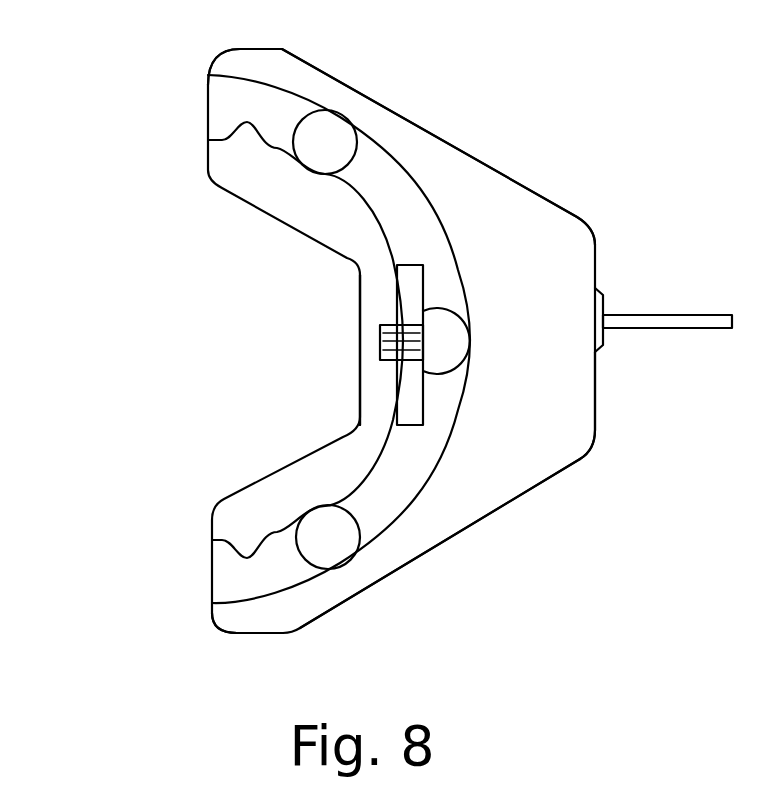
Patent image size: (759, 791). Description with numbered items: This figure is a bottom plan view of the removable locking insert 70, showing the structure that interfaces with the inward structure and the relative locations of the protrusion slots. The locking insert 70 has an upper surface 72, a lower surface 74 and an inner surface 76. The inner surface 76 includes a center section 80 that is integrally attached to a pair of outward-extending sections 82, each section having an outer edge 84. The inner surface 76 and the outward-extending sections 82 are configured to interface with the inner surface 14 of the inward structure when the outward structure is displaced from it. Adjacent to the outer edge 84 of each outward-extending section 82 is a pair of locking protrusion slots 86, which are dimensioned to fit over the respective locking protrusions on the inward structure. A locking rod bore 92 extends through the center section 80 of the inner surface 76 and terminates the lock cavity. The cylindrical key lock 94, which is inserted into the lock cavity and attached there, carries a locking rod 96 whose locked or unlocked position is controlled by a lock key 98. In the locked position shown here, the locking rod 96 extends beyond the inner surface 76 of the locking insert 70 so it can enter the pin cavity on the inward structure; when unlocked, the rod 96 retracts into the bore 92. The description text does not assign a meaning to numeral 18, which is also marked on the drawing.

The inner surface 14 is at (401, 341).
The housing rear wall 18 is at (597, 403).
The removable locking insert 70 is at (650, 134).
The upper surface 72 is at (447, 495).
The lower surface 74 is at (443, 193).
The inner surface 76 is at (360, 292).
The center section 80 is at (360, 292).
The outward-extending sections 82 is at (223, 110).
The outer edge 84 is at (208, 73).
The locking protrusion slots 86 is at (247, 140).
The locking rod bore 92 is at (380, 318).
The cylindrical key lock 94 is at (597, 288).
The locking rod 96 is at (380, 350).
The lock key 98 is at (695, 328).